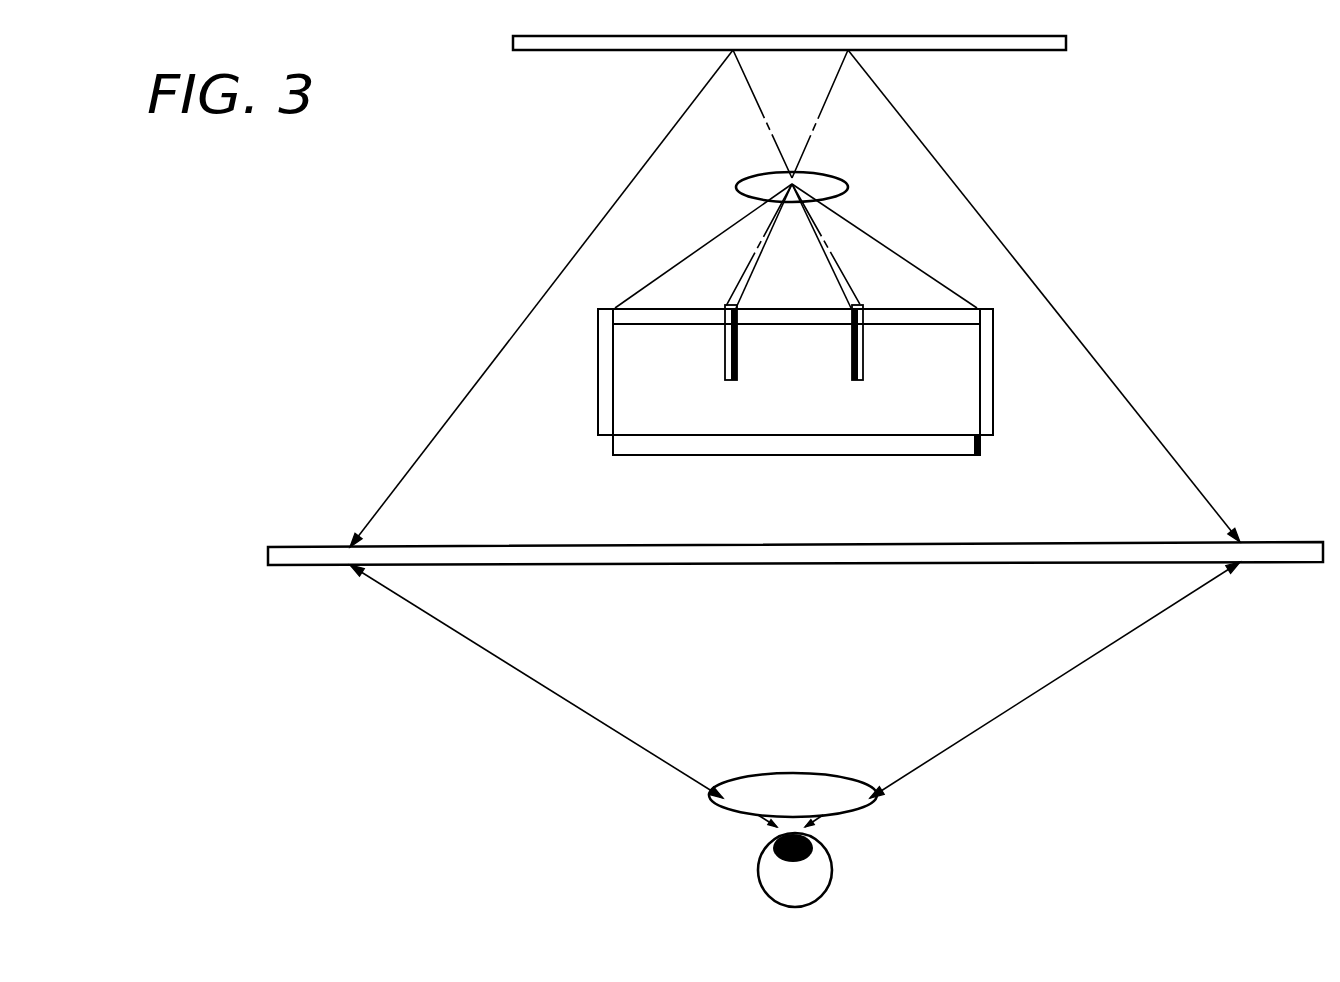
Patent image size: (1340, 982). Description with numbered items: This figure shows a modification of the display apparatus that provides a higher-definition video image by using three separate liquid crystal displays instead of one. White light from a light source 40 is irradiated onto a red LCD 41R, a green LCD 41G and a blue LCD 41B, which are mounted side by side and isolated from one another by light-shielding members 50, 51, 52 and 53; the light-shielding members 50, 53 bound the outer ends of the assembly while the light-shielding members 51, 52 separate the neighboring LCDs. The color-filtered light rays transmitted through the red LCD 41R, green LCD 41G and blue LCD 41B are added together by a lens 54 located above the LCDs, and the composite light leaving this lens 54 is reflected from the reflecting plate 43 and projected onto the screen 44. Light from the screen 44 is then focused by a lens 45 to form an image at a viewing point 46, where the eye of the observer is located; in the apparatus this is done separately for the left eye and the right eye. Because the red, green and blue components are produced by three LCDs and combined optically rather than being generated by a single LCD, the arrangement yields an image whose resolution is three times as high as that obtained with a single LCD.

The light source 40 is at (812, 457).
The red LCD 41R is at (660, 327).
The green LCD 41G is at (772, 327).
The blue LCD 41B is at (878, 327).
The reflecting plate 43 is at (1050, 52).
The screen 44 is at (423, 545).
The lens 45 is at (803, 773).
The viewing point 46 is at (832, 862).
The light-shielding member 50 is at (608, 437).
The light-shielding member 51 is at (735, 382).
The light-shielding member 52 is at (852, 382).
The light-shielding member 53 is at (987, 437).
The lens 54 is at (848, 188).